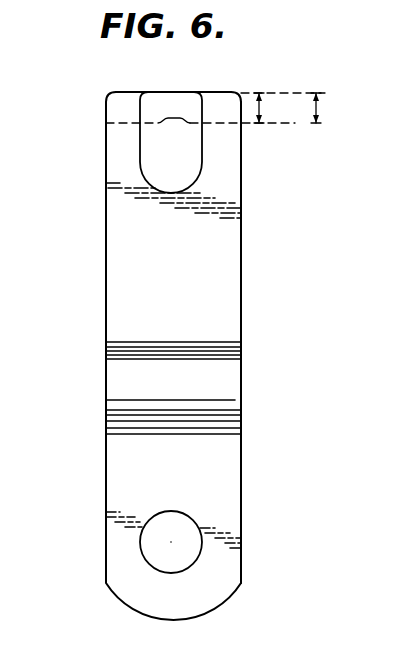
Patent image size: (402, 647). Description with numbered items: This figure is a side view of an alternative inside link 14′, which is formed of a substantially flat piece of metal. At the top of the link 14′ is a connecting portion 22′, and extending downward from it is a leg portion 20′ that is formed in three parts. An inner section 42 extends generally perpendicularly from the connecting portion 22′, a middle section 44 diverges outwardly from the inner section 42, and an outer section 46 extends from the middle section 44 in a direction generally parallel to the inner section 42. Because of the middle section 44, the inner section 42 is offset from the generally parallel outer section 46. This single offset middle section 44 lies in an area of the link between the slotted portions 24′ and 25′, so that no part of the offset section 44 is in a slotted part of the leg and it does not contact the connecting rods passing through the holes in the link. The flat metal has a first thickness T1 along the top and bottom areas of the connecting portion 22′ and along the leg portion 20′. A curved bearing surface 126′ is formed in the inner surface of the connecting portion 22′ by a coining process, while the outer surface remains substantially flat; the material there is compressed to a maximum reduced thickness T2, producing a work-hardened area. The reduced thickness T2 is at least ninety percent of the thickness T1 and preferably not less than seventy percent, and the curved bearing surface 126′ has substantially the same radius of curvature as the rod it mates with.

The inside link 14′ is at (84, 76).
The leg portion 20′ is at (246, 288).
The connecting portion 22′ is at (225, 83).
The slotted portion 24′ is at (200, 535).
The slotted portion 25′ is at (204, 162).
The curved bearing surface 126′ is at (175, 123).
The inner section 42 is at (183, 277).
The middle section 44 is at (184, 391).
The outer section 46 is at (183, 483).
The first thickness T1 is at (319, 110).
The maximum reduced thickness T2 is at (262, 110).